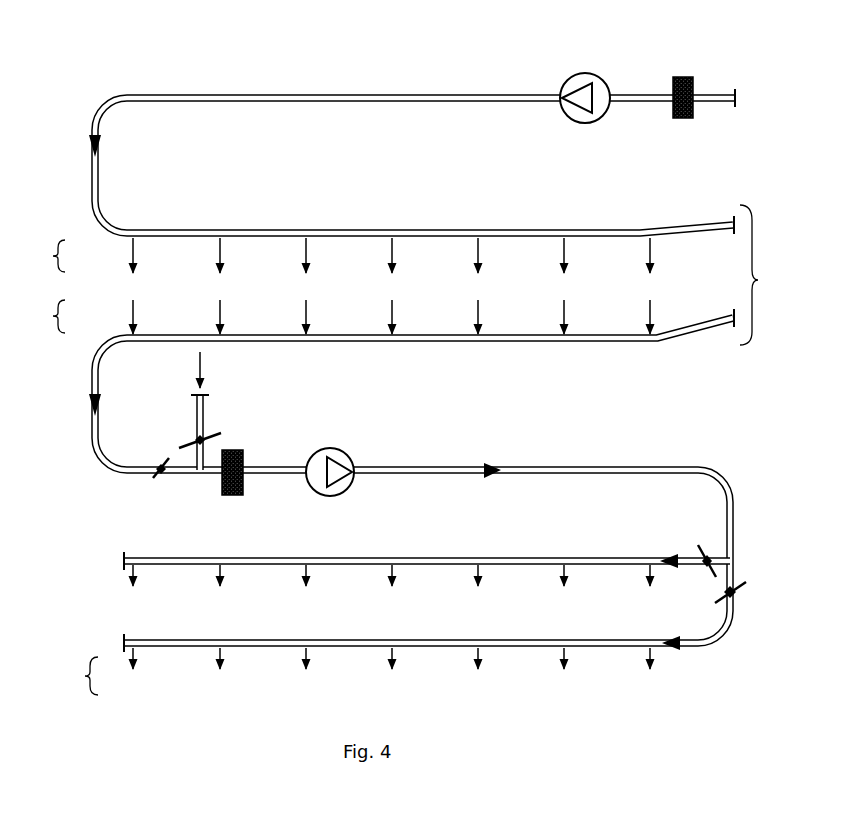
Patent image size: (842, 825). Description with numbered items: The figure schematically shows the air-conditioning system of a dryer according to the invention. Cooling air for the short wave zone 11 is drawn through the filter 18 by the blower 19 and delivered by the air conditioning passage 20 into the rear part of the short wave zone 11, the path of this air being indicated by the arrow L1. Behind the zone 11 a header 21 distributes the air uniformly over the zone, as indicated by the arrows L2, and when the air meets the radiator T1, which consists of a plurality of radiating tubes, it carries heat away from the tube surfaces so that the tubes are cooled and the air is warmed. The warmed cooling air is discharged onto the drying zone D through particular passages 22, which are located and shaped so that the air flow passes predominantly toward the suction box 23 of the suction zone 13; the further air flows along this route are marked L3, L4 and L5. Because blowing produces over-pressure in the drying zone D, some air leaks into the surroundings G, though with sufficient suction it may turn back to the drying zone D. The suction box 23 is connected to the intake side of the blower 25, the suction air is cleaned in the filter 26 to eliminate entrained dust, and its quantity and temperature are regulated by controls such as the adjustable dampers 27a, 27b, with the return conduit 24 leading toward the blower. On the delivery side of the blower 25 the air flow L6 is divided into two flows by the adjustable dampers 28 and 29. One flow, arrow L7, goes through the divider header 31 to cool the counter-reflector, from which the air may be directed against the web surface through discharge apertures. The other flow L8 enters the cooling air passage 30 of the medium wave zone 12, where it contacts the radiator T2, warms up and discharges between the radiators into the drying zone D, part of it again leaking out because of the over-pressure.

The short wave zone 11 is at (53, 256).
The medium wave zone 12 is at (84, 677).
The suction zone 13 is at (53, 316).
The filter 18 is at (678, 76).
The blower 19 is at (574, 84).
The air conditioning passage 20 is at (224, 103).
The header 21 is at (337, 229).
The passages 22 is at (303, 238).
The suction box 23 is at (624, 307).
The return conduit 24 is at (91, 432).
The blower 25 is at (338, 452).
The filter 26 is at (240, 450).
The adjustable damper 27a is at (190, 444).
The adjustable damper 27b is at (153, 477).
The adjustable damper 28 is at (704, 545).
The adjustable damper 29 is at (727, 593).
The cooling air passage 30 is at (538, 639).
The divider header 31 is at (426, 545).
The air path L1 is at (90, 142).
The air flow arrows L2 is at (222, 244).
The liquid flow L3 is at (367, 317).
The liquid flow L4 is at (90, 402).
The liquid inlet flow L5 is at (202, 362).
The air flow L6 is at (497, 463).
The air flow L7 is at (662, 555).
The air flow L8 is at (666, 636).
The radiator T1 is at (272, 299).
The radiator T2 is at (280, 704).
The drying zone D is at (360, 297).
The surroundings G is at (461, 421).